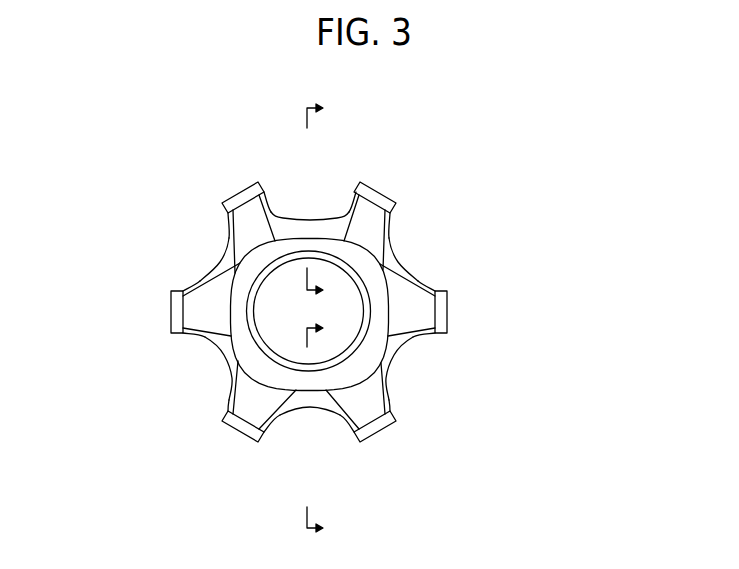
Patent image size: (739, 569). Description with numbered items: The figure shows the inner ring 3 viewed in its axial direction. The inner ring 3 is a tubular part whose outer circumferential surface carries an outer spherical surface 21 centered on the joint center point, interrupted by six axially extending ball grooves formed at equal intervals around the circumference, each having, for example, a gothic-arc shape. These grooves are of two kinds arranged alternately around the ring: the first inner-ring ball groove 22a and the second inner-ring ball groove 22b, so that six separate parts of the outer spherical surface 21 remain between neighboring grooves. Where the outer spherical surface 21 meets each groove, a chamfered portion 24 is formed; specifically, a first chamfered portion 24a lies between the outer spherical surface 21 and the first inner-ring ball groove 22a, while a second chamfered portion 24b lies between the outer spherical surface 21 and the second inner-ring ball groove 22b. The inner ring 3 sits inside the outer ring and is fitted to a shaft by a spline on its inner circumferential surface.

The inner ring 3 is at (560, 213).
The outer spherical surface 21 is at (236, 186).
The first inner-ring ball groove 22a is at (311, 210).
The second inner-ring ball groove 22b is at (222, 262).
The chamfered portion 24 is at (358, 186).
The first chamfered portion 24a is at (262, 190).
The second chamfered portion 24b is at (208, 213).